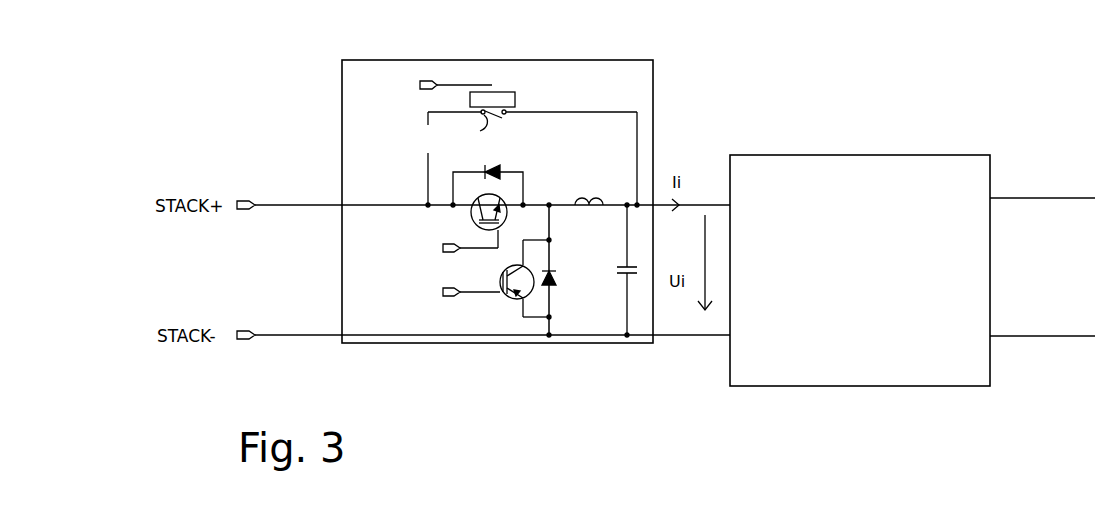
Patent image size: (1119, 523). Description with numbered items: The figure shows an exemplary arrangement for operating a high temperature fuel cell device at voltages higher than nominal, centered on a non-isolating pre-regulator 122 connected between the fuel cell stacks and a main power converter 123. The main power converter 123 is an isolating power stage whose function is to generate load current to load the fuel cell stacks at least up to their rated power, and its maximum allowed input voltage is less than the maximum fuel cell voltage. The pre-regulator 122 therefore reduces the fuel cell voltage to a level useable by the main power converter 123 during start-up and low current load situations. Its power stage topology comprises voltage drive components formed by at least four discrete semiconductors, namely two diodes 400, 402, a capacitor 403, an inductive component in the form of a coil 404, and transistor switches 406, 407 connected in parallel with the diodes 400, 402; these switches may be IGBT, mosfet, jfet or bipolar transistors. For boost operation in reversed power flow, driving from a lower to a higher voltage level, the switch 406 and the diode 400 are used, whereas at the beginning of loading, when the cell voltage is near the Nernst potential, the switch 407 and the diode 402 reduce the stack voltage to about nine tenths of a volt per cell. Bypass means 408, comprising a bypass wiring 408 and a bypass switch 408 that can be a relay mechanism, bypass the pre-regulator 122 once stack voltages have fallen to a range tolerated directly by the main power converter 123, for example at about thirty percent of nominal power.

The non-isolating pre-regulator 122 is at (593, 58).
The main power converter 123 is at (850, 155).
The diode 400 is at (501, 170).
The diode 402 is at (557, 277).
The capacitor 403 is at (632, 278).
The coil 404 is at (584, 208).
The transistor switch 406 is at (510, 299).
The transistor switch 407 is at (470, 218).
The bypass means 408 is at (678, 80).